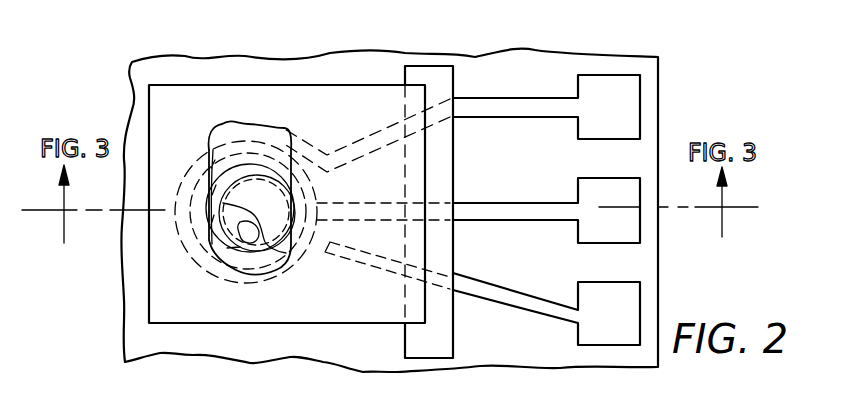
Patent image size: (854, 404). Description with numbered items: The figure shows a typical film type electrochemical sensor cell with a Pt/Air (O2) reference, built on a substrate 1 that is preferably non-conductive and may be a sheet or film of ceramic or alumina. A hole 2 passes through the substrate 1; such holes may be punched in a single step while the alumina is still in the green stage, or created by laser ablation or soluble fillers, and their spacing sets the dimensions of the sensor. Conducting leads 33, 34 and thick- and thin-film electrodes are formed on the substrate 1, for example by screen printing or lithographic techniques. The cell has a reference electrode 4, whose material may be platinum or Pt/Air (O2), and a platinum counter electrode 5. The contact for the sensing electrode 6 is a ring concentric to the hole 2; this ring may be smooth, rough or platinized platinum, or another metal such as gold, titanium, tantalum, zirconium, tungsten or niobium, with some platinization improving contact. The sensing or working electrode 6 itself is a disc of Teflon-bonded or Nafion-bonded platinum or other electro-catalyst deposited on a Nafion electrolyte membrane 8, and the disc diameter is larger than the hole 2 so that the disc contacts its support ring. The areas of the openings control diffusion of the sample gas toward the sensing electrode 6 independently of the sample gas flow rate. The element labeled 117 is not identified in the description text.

The substrate 1 is at (513, 67).
The holes 2 is at (238, 220).
The reference electrode 4 is at (358, 253).
The counter electrode 5 is at (237, 138).
The sensing electrode 6 is at (262, 170).
The Nafion electrolyte membrane 8 is at (175, 103).
The conducting lead 33 is at (222, 256).
The conducting lead 34 is at (540, 308).
The frame bar 117 is at (432, 342).